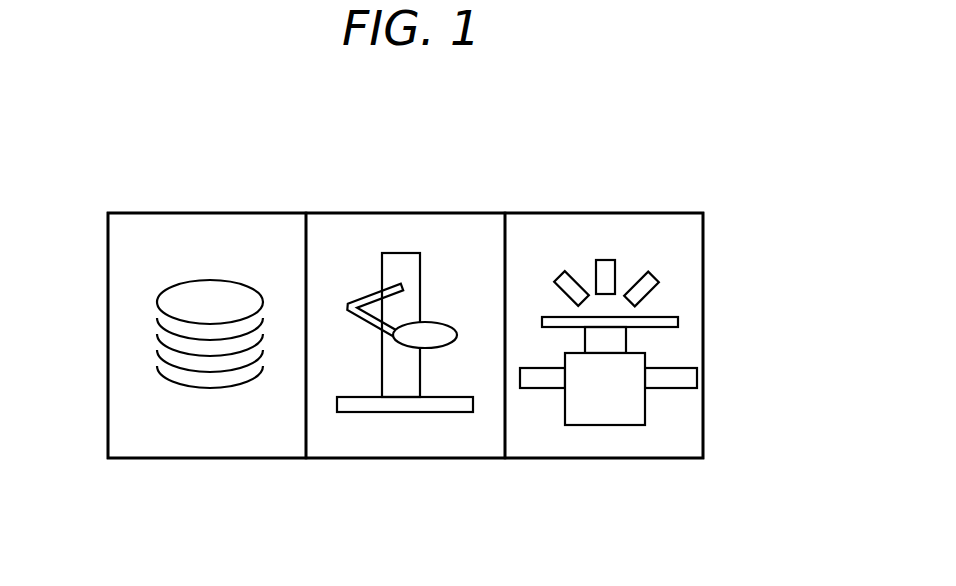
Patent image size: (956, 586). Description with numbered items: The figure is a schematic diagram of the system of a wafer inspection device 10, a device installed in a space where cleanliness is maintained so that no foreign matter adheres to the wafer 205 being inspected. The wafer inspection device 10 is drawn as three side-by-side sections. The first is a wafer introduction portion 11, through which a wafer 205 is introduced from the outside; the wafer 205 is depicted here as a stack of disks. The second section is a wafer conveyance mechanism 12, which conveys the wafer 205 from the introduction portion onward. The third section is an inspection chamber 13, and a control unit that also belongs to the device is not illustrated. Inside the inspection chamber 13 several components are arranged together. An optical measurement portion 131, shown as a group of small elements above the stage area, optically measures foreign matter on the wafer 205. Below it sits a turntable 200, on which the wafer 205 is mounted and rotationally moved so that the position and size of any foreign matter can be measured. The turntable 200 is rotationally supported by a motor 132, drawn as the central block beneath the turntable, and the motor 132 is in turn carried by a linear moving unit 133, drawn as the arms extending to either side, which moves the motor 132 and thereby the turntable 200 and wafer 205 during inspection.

The wafer inspection device 10 is at (430, 118).
The wafer introduction portion 11 is at (158, 213).
The wafer conveyance mechanism 12 is at (400, 213).
The inspection chamber 13 is at (588, 213).
The optical measurement portion 131 is at (647, 265).
The motor 132 is at (632, 415).
The linear moving unit 133 is at (680, 382).
The turntable 200 is at (667, 315).
The wafer 205 is at (193, 293).